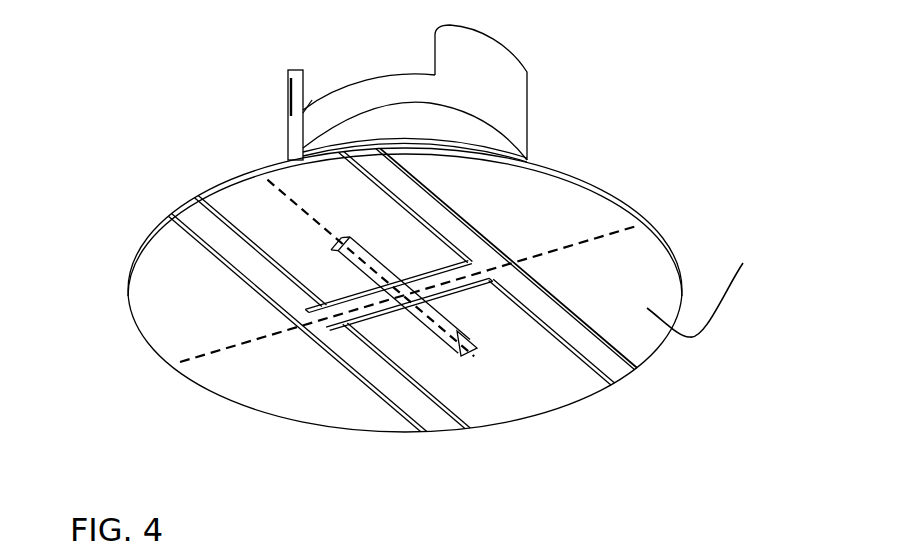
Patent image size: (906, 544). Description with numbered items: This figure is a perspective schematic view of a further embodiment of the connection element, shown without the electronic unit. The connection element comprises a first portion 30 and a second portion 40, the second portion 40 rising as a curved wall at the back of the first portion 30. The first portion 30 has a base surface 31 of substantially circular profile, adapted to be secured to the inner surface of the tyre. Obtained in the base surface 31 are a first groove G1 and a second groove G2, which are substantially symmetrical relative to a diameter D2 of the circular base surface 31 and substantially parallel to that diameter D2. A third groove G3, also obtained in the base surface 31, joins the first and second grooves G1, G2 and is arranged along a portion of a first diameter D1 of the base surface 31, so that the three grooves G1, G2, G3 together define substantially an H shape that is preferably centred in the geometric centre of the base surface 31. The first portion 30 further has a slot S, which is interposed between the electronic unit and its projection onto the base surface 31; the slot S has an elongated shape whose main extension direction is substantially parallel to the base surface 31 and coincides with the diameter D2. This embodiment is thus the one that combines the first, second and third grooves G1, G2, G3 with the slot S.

The first portion 30 is at (625, 189).
The base surface 31 is at (711, 288).
The second portion 40 is at (532, 110).
The first groove G1 is at (610, 363).
The second groove G2 is at (427, 415).
The third groove G3 is at (452, 287).
The slot S is at (437, 330).
The first diameter D1 is at (190, 356).
The diameter D2 is at (293, 200).